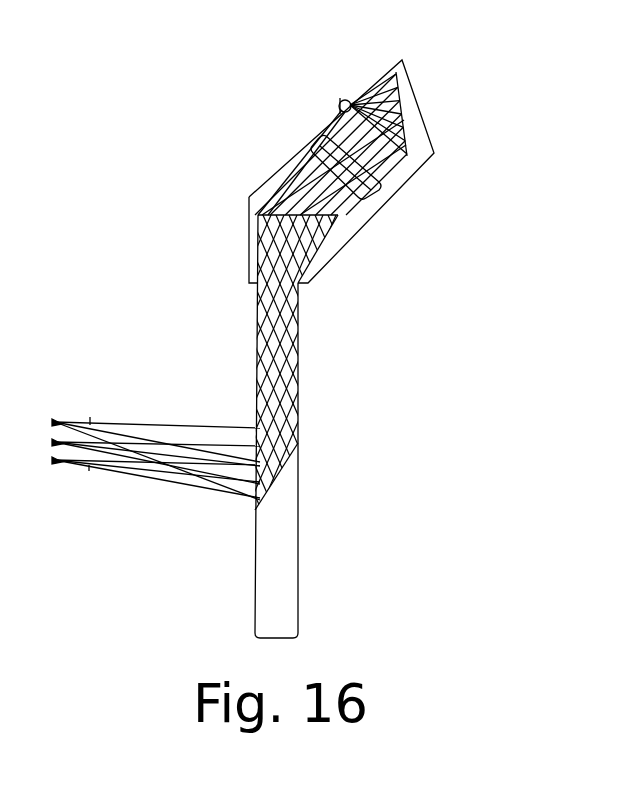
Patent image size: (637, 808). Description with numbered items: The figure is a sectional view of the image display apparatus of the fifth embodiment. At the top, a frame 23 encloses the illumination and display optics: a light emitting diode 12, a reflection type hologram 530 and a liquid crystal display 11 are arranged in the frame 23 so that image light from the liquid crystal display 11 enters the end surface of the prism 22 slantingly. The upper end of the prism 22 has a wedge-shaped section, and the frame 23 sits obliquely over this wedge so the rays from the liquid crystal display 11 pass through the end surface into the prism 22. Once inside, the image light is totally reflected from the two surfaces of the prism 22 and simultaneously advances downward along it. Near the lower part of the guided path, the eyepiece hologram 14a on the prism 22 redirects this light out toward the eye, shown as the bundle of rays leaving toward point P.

The light emitting diode 12 is at (343, 105).
The reflection type hologram 530 is at (400, 103).
The frame 23 is at (278, 172).
The liquid crystal display 11 is at (380, 186).
The eyepiece hologram 14a is at (285, 457).
The prism 22 is at (296, 543).
The object / original P is at (89, 471).